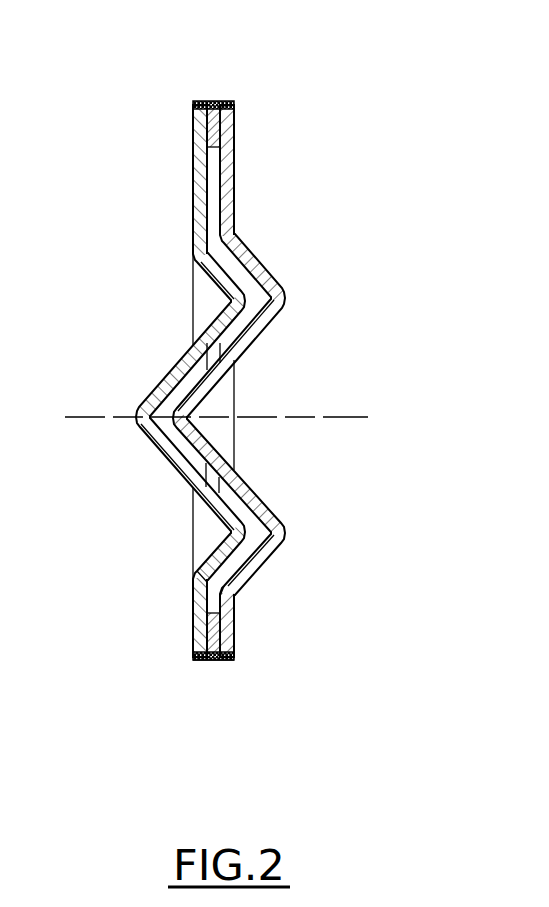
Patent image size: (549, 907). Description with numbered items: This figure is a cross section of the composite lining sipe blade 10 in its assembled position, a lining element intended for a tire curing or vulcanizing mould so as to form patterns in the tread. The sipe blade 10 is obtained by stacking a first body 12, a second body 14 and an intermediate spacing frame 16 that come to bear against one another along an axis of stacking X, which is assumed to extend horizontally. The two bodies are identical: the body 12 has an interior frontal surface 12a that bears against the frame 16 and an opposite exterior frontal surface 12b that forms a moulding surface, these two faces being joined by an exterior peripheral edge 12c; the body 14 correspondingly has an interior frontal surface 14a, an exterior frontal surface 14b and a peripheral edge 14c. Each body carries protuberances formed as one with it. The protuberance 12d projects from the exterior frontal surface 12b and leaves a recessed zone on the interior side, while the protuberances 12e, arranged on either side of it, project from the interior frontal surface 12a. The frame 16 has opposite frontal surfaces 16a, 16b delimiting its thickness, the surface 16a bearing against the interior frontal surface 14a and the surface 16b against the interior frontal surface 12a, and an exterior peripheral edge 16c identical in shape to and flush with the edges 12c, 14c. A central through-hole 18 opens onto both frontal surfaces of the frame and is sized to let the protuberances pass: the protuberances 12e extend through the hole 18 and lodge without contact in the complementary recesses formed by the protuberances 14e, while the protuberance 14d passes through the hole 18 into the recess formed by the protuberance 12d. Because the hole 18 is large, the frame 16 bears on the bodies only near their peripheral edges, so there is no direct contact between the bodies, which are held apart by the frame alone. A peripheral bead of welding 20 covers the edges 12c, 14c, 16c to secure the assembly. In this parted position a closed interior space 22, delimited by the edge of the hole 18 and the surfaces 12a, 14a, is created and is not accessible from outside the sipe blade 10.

The composite lining sipe blade 10 is at (297, 81).
The first body 12 is at (186, 162).
The interior frontal surface 12a is at (208, 590).
The exterior frontal surface 12b is at (192, 600).
The exterior peripheral edge 12c is at (193, 661).
The protuberance 12d is at (137, 416).
The protuberances 12e is at (235, 301).
The second body 14 is at (268, 262).
The interior frontal surface 14a is at (215, 595).
The exterior frontal surface 14b is at (233, 607).
The exterior peripheral edge 14c is at (227, 661).
The protuberance 14d is at (173, 416).
The protuberances 14e is at (286, 296).
The intermediate spacing frame 16 is at (200, 129).
The frontal surface 16a is at (220, 640).
The frontal surface 16b is at (202, 638).
The exterior peripheral edge 16c is at (217, 661).
The central through-hole 18 is at (222, 150).
The peripheral bead of welding 20 is at (212, 100).
The interior space 22 is at (239, 328).
The axis of stacking X is at (212, 430).